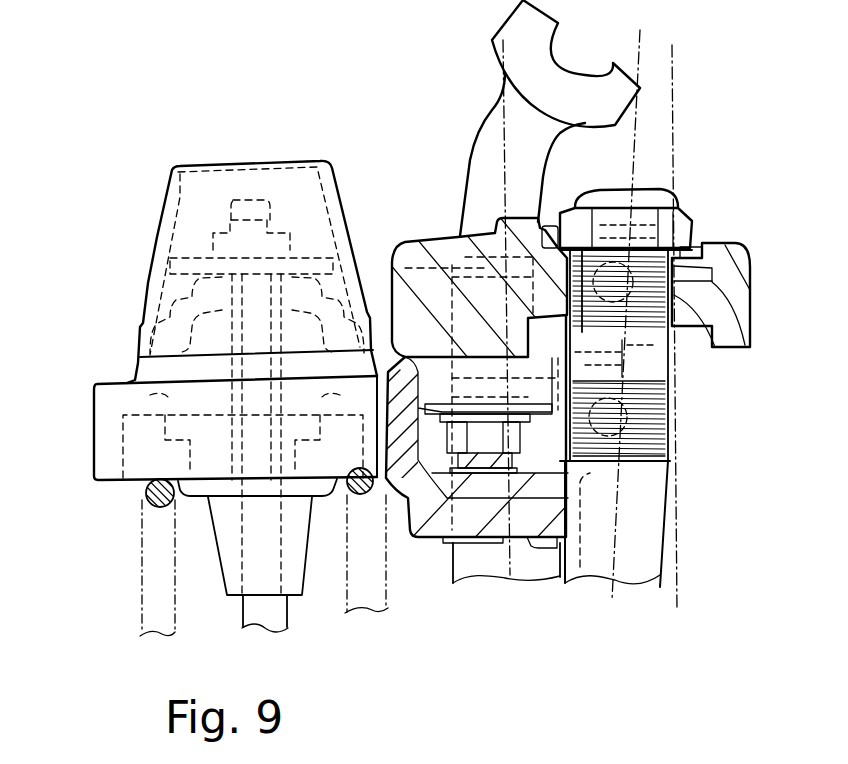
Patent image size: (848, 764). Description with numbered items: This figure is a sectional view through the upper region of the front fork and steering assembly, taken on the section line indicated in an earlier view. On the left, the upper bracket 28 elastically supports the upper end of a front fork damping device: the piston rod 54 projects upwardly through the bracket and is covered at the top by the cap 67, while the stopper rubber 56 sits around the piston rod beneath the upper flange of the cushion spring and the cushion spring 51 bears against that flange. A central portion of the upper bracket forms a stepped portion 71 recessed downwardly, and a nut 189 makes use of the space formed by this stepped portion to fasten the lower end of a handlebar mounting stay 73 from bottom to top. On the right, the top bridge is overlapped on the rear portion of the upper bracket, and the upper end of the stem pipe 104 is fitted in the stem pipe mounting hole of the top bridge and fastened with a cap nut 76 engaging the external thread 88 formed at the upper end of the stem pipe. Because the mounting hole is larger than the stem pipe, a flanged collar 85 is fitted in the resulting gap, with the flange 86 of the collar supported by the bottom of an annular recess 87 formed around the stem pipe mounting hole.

The cap 67 is at (155, 233).
The upper bracket 28 is at (102, 417).
The seal ring 51 is at (143, 540).
The tapered hub 56 is at (225, 550).
The shaft 54 is at (277, 608).
The arm with hook 73 is at (467, 160).
The bracket body 71 is at (430, 532).
The nut 189 is at (483, 445).
The nut 76 is at (650, 195).
The threaded bolt 88 is at (662, 352).
The clamp member 85 is at (752, 316).
The clamp face 86 is at (752, 283).
The clamp top 87 is at (702, 240).
The stem pipe 104 is at (648, 513).